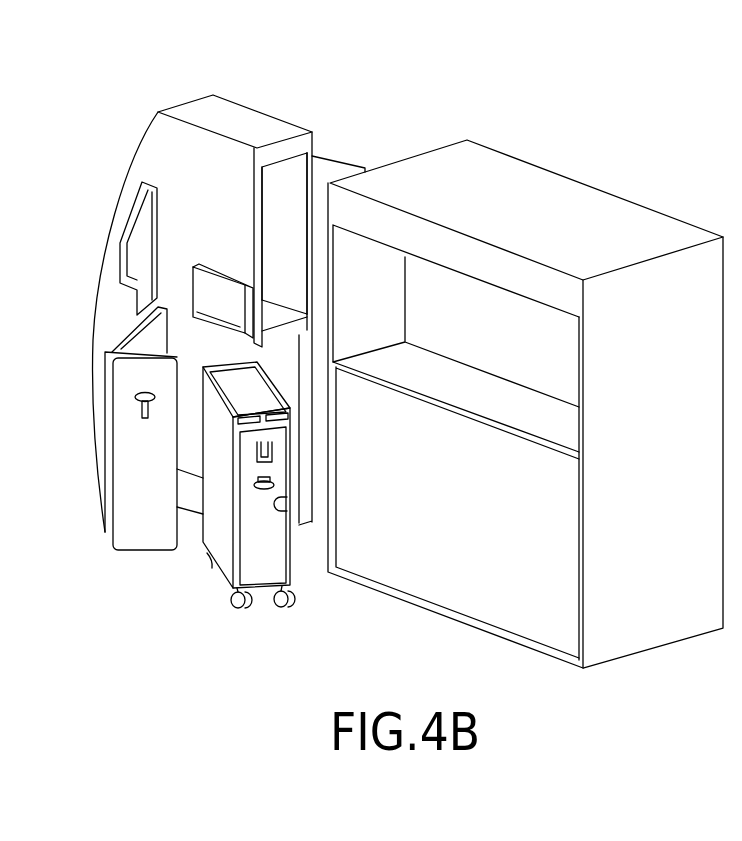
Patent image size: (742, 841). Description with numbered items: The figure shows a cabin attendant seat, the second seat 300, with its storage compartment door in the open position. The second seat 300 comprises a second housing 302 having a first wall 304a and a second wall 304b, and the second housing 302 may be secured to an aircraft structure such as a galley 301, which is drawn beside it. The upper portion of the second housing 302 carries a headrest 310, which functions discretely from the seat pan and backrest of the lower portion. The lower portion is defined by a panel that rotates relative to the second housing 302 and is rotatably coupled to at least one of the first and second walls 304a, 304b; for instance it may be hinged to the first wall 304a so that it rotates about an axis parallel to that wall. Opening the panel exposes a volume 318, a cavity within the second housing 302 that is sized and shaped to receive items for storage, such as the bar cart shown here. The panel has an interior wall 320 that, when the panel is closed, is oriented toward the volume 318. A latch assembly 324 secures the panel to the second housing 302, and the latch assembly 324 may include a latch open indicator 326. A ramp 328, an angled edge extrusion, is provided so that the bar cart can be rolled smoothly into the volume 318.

The second seat 300 is at (322, 80).
The galley 301 is at (587, 197).
The second housing 302 is at (182, 153).
The first wall 304a is at (290, 148).
The second wall 304b is at (127, 177).
The headrest 310 is at (215, 295).
The volume 318 is at (174, 389).
The interior wall 320 is at (148, 345).
The latch assembly 324 is at (144, 417).
The latch open indicator 326 is at (145, 409).
The ramp 328 is at (197, 492).